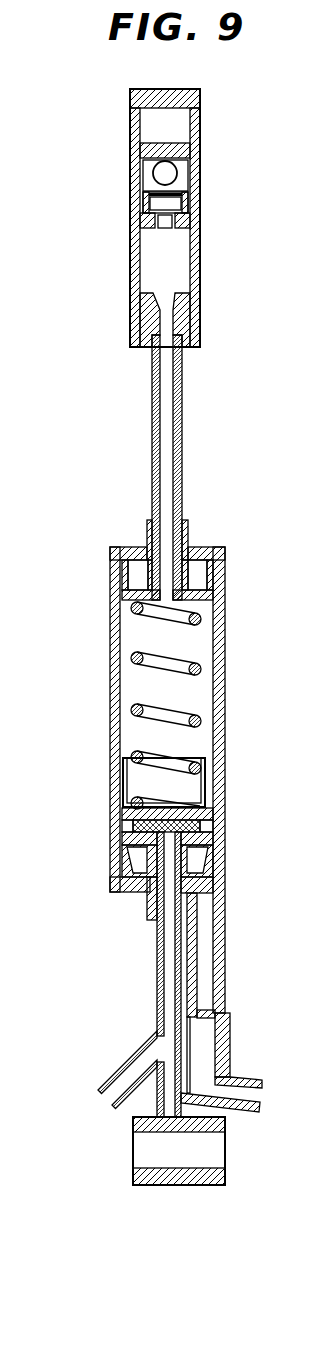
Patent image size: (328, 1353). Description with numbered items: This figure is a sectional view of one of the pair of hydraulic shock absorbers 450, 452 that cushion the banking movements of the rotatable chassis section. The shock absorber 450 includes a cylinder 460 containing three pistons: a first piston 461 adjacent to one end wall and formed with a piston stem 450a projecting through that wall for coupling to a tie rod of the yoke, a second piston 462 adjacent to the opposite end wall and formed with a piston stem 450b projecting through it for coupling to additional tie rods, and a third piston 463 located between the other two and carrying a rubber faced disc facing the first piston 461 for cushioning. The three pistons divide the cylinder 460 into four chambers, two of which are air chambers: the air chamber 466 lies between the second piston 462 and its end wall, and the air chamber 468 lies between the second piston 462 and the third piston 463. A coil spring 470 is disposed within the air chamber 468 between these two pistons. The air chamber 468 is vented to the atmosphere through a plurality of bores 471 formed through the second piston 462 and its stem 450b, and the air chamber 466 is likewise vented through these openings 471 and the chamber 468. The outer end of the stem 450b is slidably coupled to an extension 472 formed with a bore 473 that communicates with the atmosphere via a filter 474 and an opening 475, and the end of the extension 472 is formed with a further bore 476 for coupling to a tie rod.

The shock absorber 450 is at (175, 726).
The piston stem 450a is at (126, 974).
The piston stem 450b is at (152, 435).
The shock absorber 452 is at (210, 524).
The cylinder 460 is at (112, 812).
The first piston 461 is at (122, 863).
The second piston 462 is at (205, 592).
The third piston 463 is at (207, 787).
The air chamber 466 is at (193, 571).
The air chamber 468 is at (190, 693).
The coil spring 470 is at (203, 620).
The bores 471 is at (145, 598).
The extension 472 is at (203, 280).
The bore 473 is at (165, 224).
The filter 474 is at (176, 196).
The opening 475 is at (167, 173).
The bore 476 is at (148, 1145).